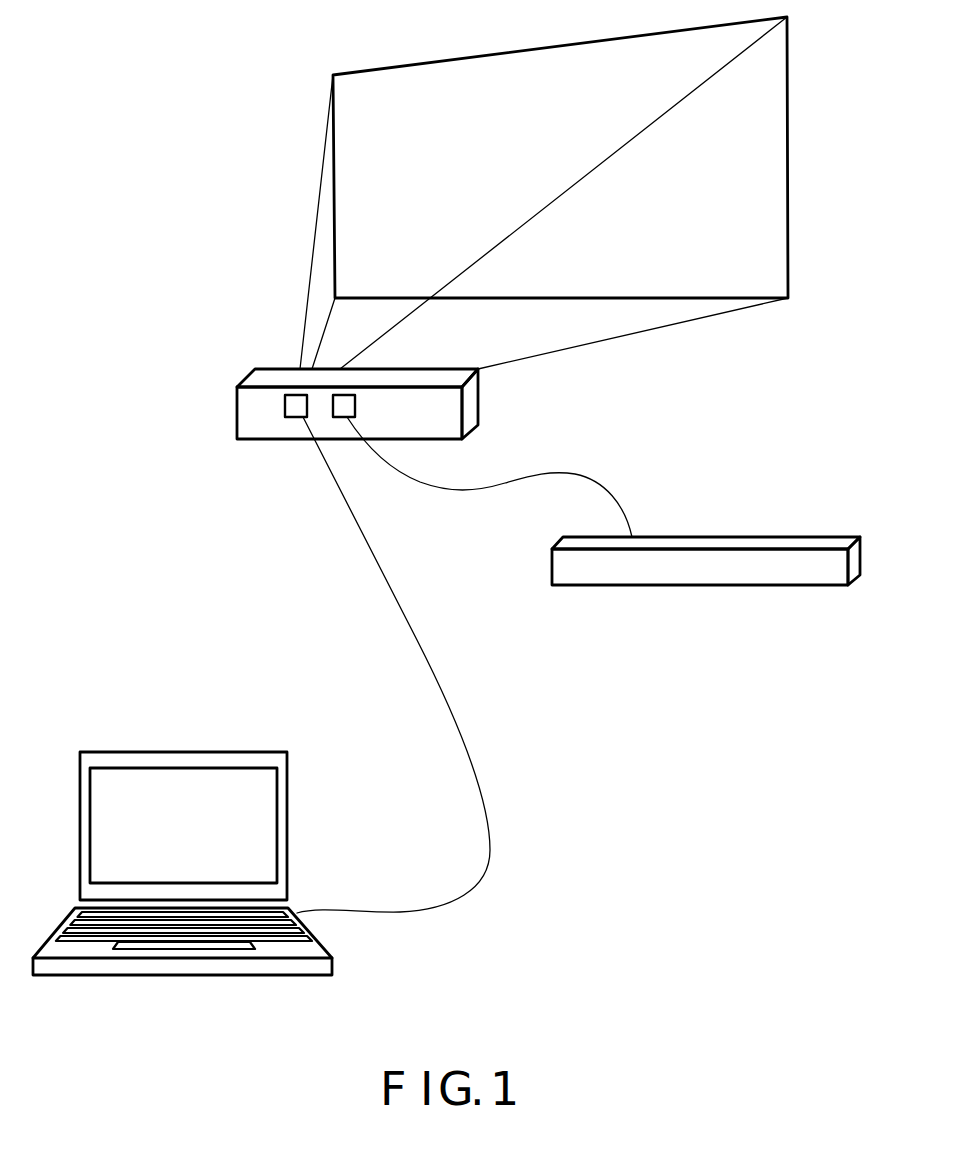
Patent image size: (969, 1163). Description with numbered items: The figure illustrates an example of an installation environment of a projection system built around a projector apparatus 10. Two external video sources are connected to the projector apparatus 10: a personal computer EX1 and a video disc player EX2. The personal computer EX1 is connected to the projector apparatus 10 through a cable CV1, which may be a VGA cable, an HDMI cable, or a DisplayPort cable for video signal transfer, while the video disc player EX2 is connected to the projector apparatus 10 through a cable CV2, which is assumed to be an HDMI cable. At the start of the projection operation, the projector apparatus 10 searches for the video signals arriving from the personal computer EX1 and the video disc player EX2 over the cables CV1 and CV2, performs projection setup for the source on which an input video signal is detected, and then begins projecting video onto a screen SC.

The screen SC is at (788, 60).
The projector apparatus 10 is at (237, 410).
The cable CV1 is at (437, 680).
The cable CV2 is at (552, 473).
The personal computer EX1 is at (232, 752).
The video disc player EX2 is at (800, 548).